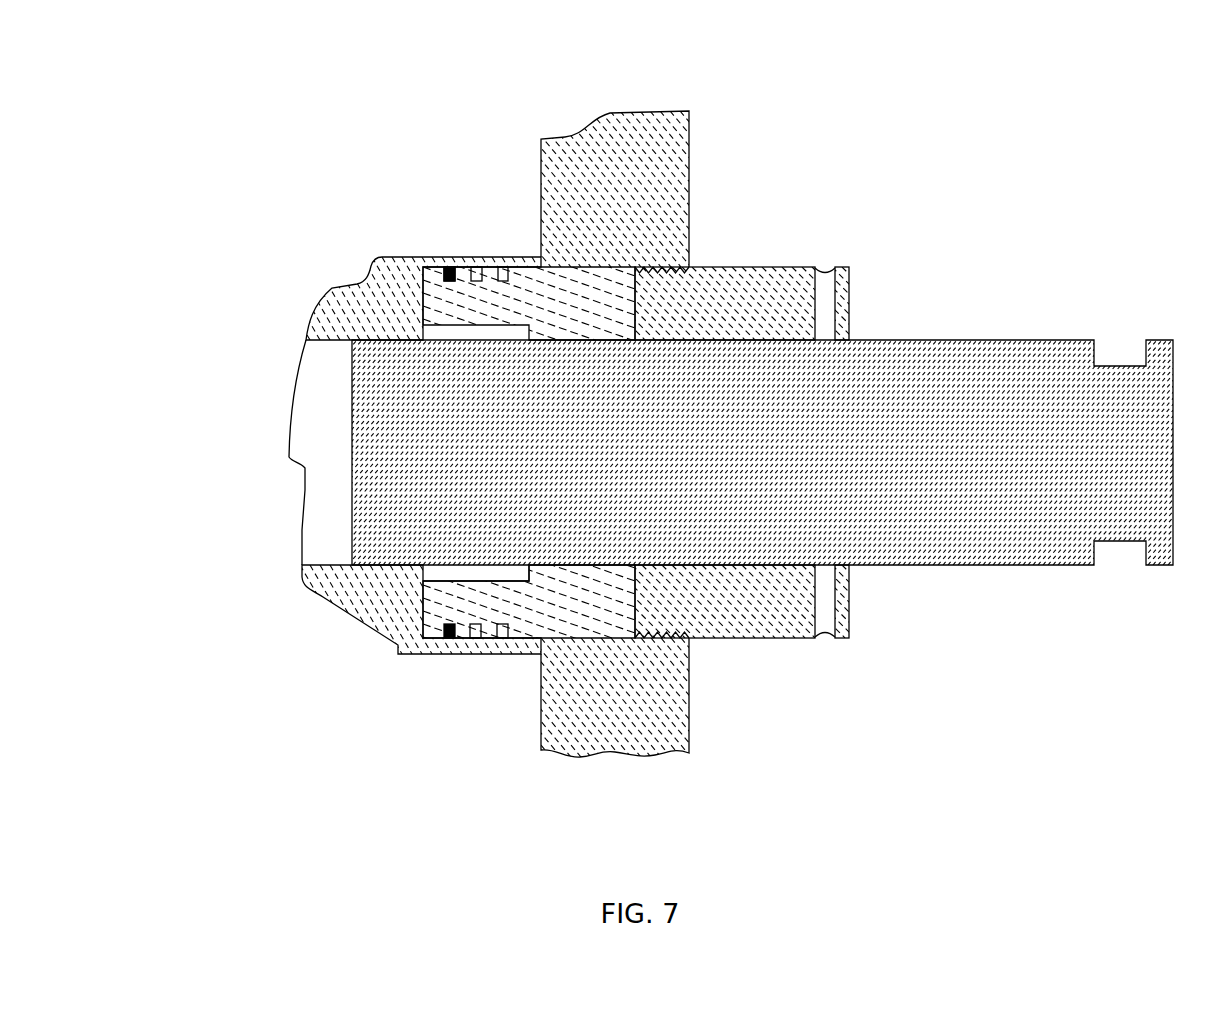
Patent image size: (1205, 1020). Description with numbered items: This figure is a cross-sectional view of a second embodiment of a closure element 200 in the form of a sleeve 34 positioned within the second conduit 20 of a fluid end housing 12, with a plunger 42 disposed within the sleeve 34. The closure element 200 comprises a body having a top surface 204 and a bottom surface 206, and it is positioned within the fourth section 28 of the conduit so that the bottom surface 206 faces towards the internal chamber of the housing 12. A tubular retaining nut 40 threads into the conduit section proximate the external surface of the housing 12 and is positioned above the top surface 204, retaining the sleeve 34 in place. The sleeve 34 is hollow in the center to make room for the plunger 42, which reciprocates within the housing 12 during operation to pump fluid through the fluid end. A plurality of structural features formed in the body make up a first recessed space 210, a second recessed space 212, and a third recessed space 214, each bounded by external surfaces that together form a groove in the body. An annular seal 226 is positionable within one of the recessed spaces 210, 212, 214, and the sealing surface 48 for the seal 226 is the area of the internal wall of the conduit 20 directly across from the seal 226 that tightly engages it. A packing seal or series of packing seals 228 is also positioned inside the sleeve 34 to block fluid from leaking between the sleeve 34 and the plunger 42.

The housing 12 is at (689, 718).
The second conduit 20 is at (322, 405).
The fourth section 28 is at (322, 566).
The sleeve 34 is at (540, 290).
The retaining nut 40 is at (850, 598).
The plunger 42 is at (948, 340).
The sealing surface 48 is at (450, 270).
The closure element 200 is at (597, 290).
The top surface 204 is at (635, 590).
The bottom surface 206 is at (423, 603).
The first recessed space 210 is at (449, 638).
The second recessed space 212 is at (475, 633).
The third recessed space 214 is at (502, 632).
The annular seal 226 is at (453, 270).
The packing seals 228 is at (505, 578).